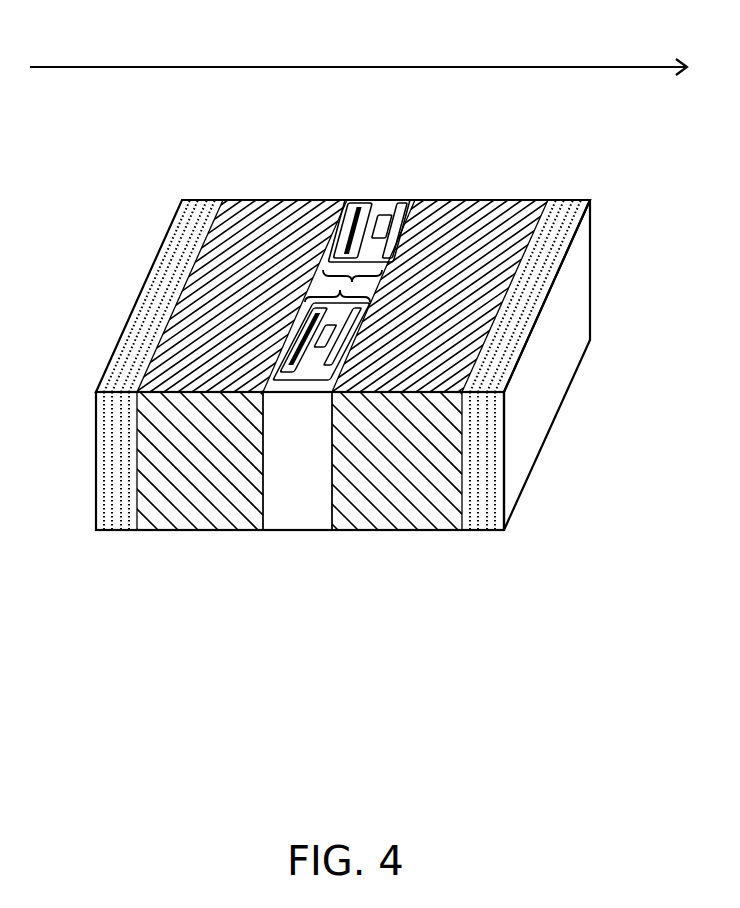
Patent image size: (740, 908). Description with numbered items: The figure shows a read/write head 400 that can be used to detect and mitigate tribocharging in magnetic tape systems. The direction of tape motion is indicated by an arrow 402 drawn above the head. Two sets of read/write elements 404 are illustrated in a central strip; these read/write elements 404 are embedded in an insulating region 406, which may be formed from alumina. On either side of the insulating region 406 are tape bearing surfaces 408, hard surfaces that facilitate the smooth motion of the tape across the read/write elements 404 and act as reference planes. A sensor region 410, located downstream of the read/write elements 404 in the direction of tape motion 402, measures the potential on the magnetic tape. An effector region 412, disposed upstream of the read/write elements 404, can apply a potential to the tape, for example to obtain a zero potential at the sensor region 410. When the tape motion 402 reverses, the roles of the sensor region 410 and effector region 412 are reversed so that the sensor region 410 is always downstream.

The read/write head 400 is at (370, 831).
The arrow indicating tape motion 402 is at (297, 67).
The read/write elements 404 is at (345, 198).
The insulating region 406 is at (299, 504).
The tape bearing surfaces 408 is at (196, 531).
The sensor region 410 is at (563, 200).
The effector region 412 is at (198, 200).